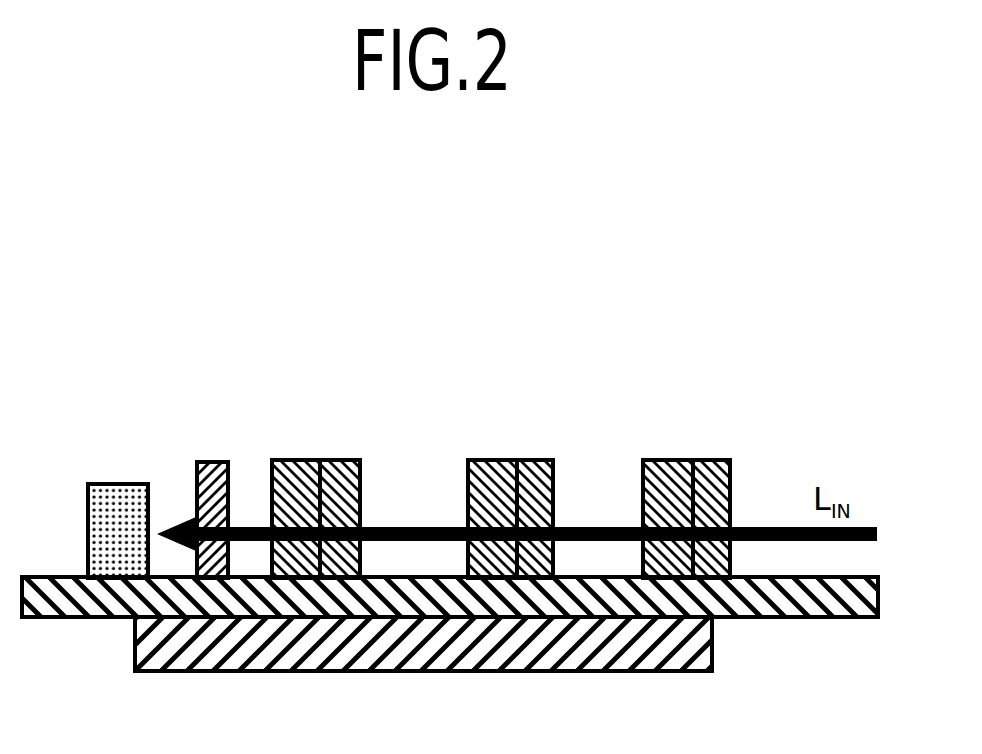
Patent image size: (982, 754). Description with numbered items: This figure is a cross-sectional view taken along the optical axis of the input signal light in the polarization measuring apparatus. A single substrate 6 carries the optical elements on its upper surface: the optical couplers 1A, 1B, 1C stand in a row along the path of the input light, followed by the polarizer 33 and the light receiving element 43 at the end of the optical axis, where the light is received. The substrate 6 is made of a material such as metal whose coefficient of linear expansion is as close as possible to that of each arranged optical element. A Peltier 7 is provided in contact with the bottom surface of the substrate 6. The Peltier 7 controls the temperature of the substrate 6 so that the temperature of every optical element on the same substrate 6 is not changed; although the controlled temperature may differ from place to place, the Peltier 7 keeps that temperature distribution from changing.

The optical coupler 1A is at (673, 460).
The optical coupler 1B is at (502, 460).
The optical coupler 1C is at (310, 460).
The polarizer 33 is at (207, 462).
The light receiving element 43 is at (117, 484).
The substrate 6 is at (767, 618).
The Peltier 7 is at (437, 673).